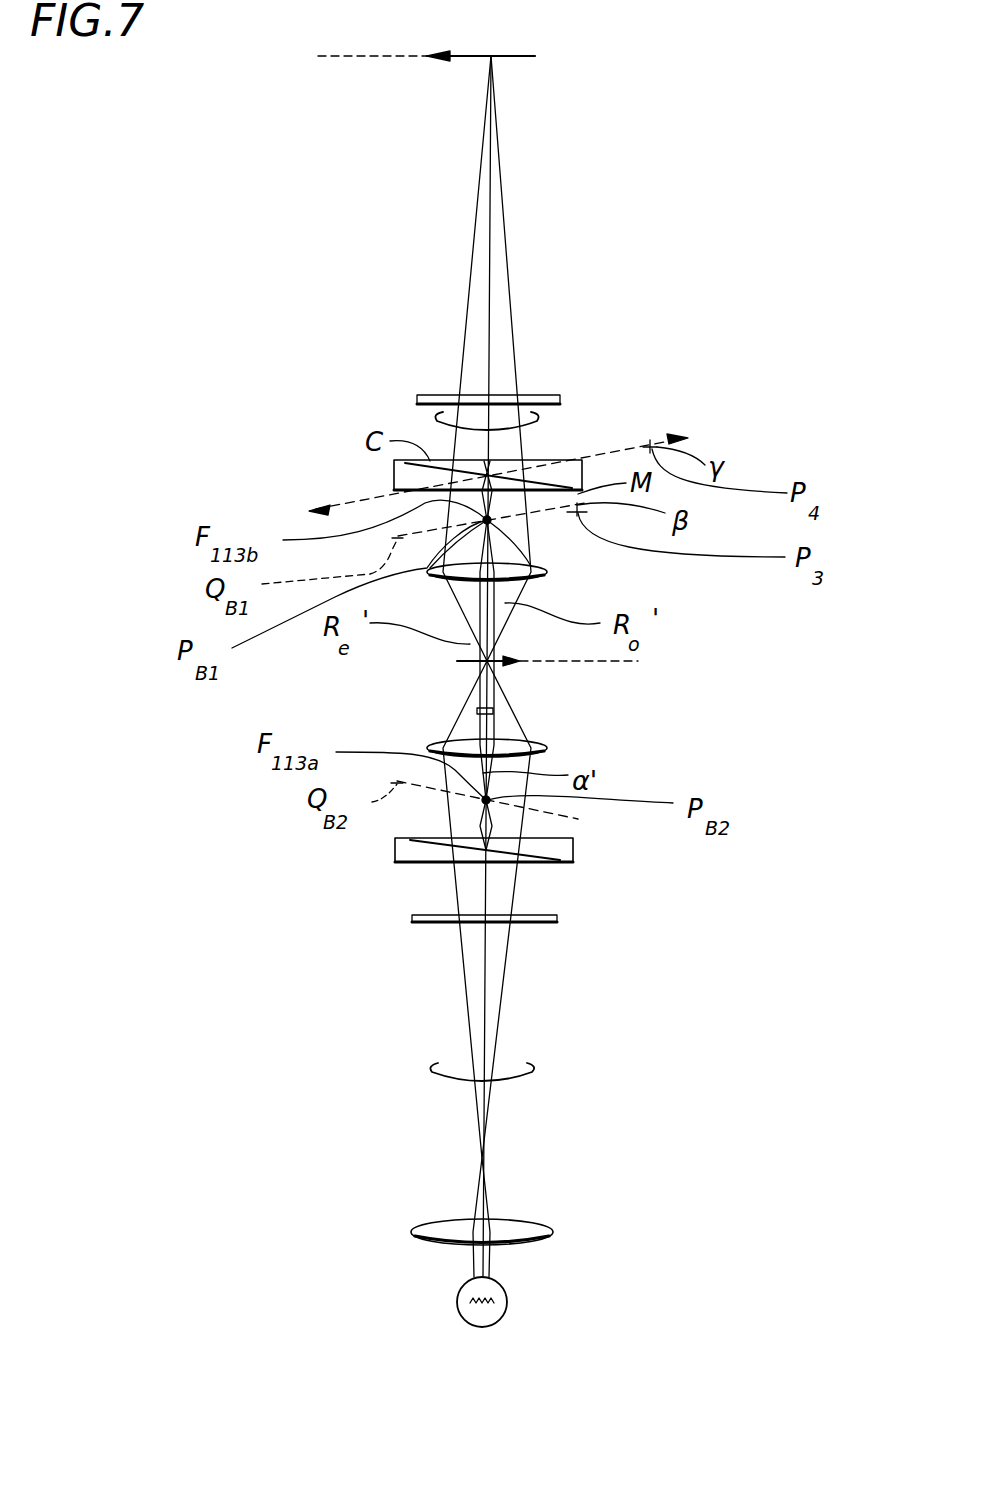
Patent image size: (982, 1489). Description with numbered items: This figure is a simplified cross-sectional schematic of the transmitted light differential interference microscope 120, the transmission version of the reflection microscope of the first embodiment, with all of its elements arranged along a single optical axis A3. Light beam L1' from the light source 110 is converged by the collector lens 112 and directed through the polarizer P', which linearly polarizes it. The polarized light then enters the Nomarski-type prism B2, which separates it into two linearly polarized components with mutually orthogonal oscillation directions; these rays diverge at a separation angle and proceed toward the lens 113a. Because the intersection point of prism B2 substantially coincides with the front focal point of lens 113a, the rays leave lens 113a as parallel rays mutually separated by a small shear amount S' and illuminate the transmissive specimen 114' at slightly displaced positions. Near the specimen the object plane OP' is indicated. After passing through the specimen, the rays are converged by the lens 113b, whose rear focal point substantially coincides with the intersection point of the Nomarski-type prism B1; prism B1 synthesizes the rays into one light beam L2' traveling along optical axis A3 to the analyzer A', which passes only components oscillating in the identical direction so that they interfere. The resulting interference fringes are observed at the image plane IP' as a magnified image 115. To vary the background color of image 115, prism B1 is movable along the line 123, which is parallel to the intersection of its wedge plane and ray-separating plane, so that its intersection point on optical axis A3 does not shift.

The light source 110 is at (507, 1300).
The collector lens 112 is at (553, 1232).
The lens 113a is at (547, 747).
The lens 113b is at (547, 571).
The specimen 114' is at (457, 680).
The magnified image 115 is at (522, 58).
The microscope 120 is at (208, 275).
The line 123 is at (630, 442).
The Nomarski-type prism B1 is at (394, 470).
The Nomarski-type prism B2 is at (573, 850).
The analyzer A' is at (526, 378).
The polarizer P' is at (525, 930).
The light beam L1' is at (567, 1048).
The synthesized light beam L2' is at (568, 394).
The shear amount S' is at (524, 716).
The image plane IP' is at (282, 92).
The object plane direction OP' is at (668, 698).
The optical axis A3 is at (494, 252).